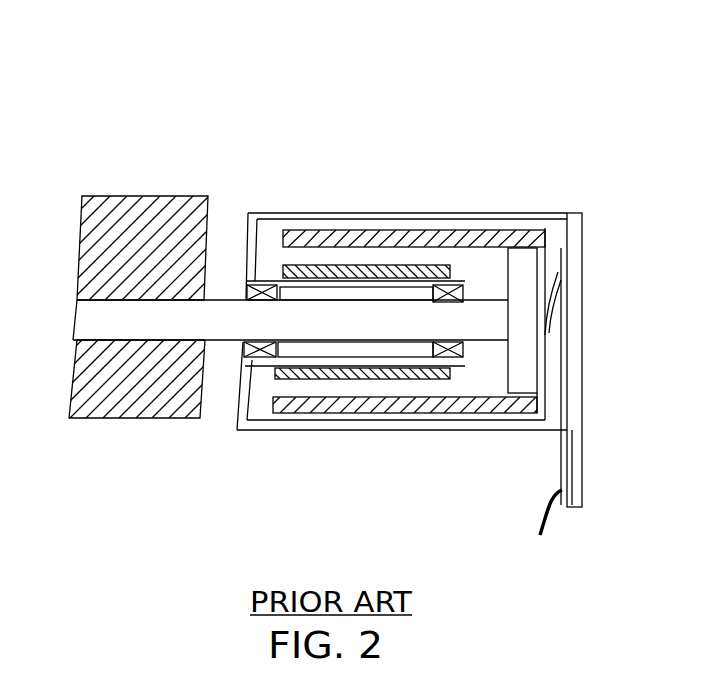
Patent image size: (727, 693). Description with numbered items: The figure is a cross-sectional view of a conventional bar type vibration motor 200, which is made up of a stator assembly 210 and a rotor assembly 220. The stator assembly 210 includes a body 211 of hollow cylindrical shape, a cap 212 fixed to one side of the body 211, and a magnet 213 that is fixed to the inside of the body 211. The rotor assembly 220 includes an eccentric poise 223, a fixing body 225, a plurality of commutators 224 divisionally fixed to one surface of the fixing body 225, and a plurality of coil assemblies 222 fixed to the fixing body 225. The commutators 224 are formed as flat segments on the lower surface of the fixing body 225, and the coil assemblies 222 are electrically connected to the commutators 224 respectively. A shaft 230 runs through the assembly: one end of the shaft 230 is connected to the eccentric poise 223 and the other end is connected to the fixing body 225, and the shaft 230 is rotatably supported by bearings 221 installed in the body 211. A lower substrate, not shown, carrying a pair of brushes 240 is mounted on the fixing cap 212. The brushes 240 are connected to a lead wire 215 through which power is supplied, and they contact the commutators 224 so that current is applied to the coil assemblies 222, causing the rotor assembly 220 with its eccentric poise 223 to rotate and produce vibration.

The bar type vibration motor 200 is at (237, 138).
The stator assembly 210 is at (587, 123).
The body 211 is at (482, 215).
The cap 212 is at (573, 215).
The magnet 213 is at (330, 270).
The rotor assembly 220 is at (495, 515).
The bearings 221 is at (240, 345).
The coil assemblies 222 is at (403, 407).
The eccentric poise 223 is at (125, 405).
The commutators 224 is at (540, 380).
The fixing body 225 is at (510, 380).
The shaft 230 is at (77, 322).
The brushes 240 is at (558, 297).
The lead wire 215 is at (548, 523).